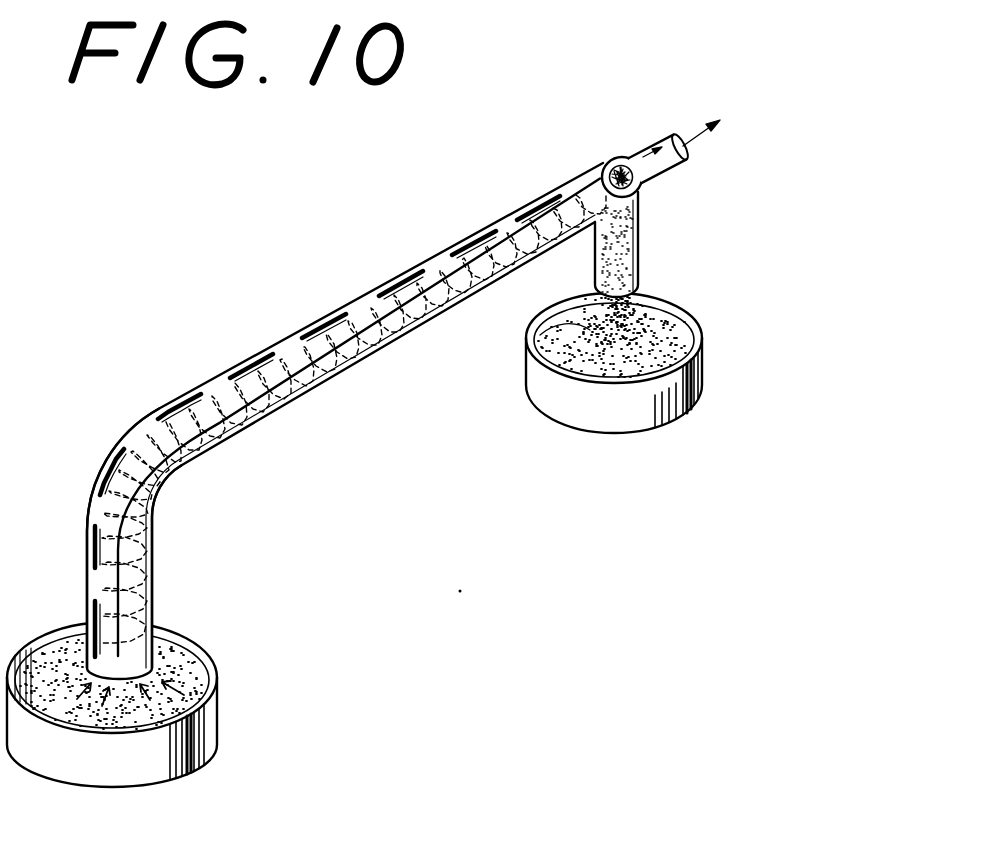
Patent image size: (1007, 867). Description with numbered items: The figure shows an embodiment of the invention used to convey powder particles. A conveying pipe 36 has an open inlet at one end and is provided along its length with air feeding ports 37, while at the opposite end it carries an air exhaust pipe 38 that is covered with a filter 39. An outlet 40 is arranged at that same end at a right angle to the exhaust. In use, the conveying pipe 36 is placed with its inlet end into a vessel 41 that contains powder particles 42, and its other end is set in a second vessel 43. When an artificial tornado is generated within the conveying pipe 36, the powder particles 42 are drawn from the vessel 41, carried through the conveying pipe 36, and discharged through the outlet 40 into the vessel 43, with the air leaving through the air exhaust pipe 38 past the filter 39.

The conveying pipe 36 is at (357, 301).
The air feeding ports 37 is at (111, 473).
The air exhaust pipe 38 is at (647, 143).
The filter 39 is at (600, 157).
The outlet 40 is at (639, 250).
The vessel 41 is at (208, 715).
The powder particles 42 is at (568, 330).
The vessel 43 is at (667, 395).